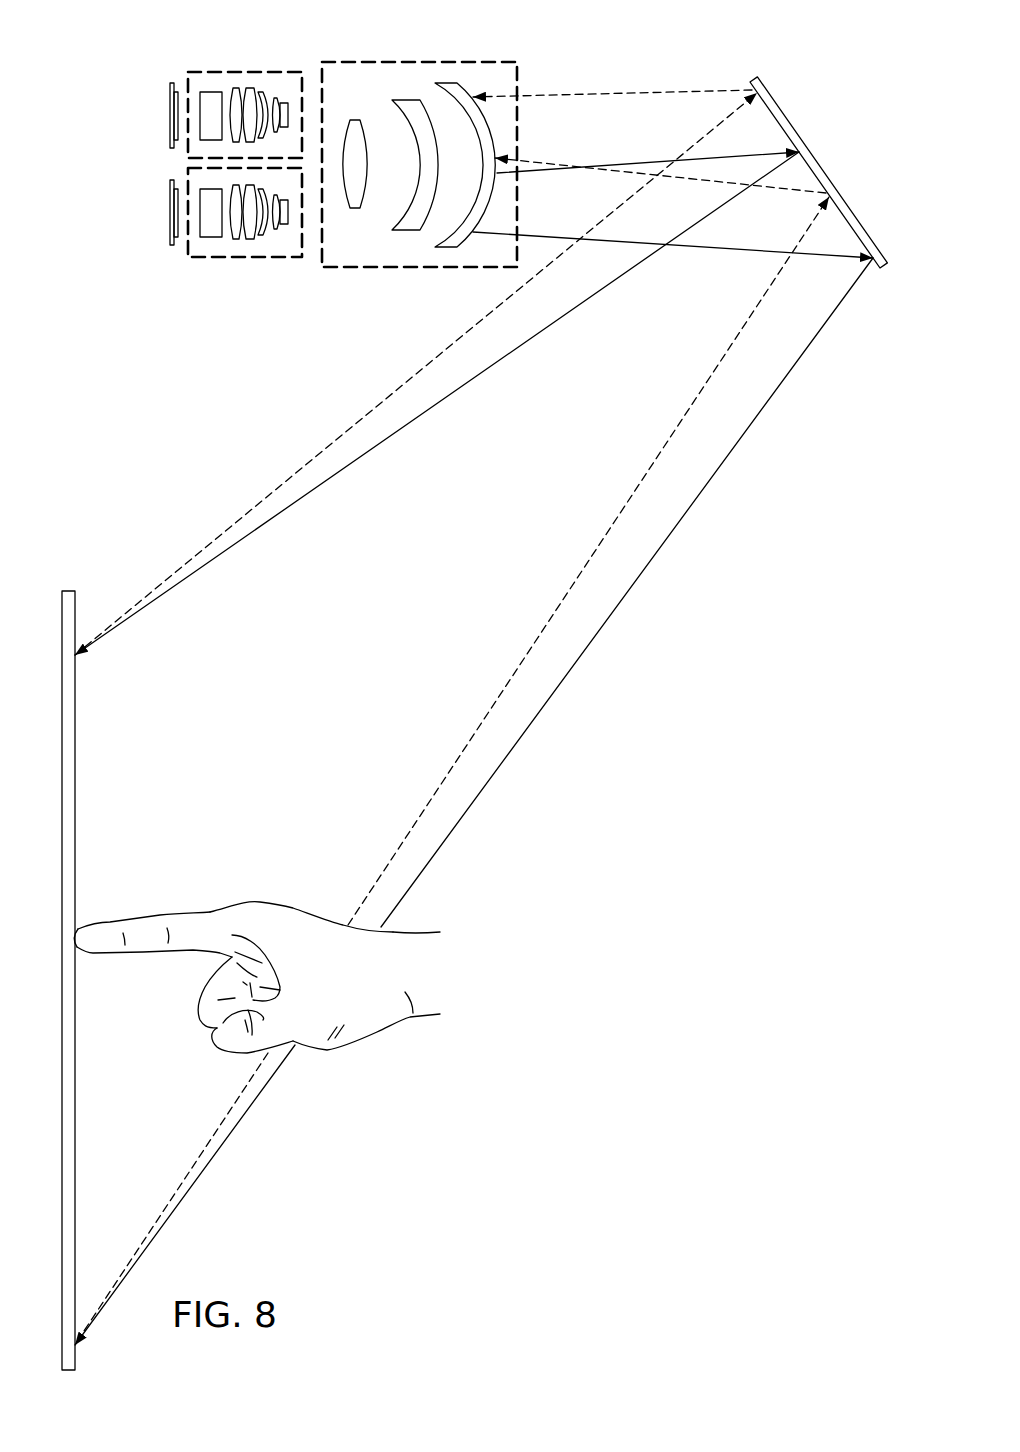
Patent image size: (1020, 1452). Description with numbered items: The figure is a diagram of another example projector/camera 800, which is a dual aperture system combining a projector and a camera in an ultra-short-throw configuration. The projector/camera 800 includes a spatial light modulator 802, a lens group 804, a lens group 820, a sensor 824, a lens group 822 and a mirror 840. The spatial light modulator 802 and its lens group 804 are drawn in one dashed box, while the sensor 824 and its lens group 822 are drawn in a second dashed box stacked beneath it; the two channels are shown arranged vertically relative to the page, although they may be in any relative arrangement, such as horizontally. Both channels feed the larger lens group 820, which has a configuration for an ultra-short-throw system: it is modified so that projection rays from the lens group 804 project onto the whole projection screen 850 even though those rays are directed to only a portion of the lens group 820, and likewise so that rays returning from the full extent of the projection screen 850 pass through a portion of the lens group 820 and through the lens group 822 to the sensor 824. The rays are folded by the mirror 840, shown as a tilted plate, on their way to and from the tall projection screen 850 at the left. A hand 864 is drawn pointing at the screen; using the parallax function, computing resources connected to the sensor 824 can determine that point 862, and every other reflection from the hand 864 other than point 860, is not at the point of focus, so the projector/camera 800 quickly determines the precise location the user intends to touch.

The projector/camera 800 is at (748, 53).
The spatial light modulator 802 is at (170, 212).
The lens group 804 is at (218, 258).
The lens group 820 is at (378, 60).
The lens group 822 is at (218, 70).
The sensor 824 is at (170, 115).
The mirror 840 is at (827, 167).
The projection screen 850 is at (77, 1083).
The point 860 is at (82, 922).
The point 862 is at (350, 926).
The hand 864 is at (370, 1045).